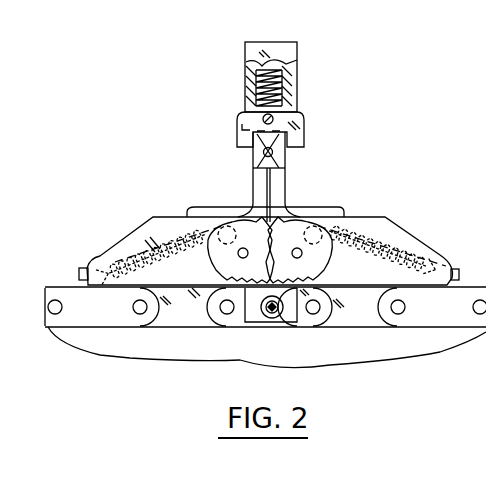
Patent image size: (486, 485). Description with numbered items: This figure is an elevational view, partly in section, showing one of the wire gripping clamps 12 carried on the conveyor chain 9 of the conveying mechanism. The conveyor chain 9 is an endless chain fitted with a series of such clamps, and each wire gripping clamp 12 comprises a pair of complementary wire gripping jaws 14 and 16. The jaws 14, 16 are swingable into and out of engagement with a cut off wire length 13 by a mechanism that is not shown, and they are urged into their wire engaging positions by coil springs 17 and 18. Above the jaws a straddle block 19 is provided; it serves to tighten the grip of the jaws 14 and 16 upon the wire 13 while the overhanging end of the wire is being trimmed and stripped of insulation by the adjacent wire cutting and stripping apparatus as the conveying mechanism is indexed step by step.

The conveyor chain 9 is at (450, 318).
The wire gripping clamp 12 is at (356, 196).
The cut off wire length 13 is at (262, 152).
The wire gripping jaw 14 is at (251, 181).
The wire gripping jaw 16 is at (288, 183).
The coil spring 17 is at (137, 246).
The coil spring 18 is at (390, 246).
The straddle block 19 is at (303, 126).